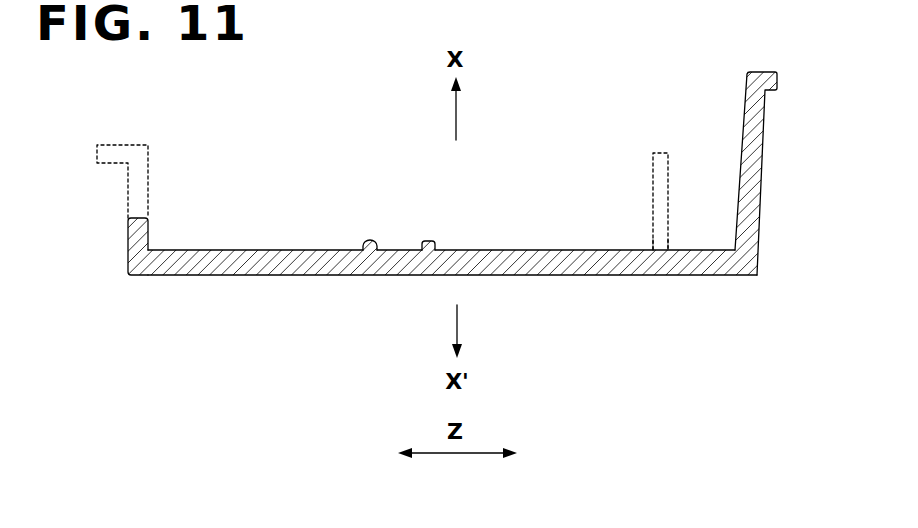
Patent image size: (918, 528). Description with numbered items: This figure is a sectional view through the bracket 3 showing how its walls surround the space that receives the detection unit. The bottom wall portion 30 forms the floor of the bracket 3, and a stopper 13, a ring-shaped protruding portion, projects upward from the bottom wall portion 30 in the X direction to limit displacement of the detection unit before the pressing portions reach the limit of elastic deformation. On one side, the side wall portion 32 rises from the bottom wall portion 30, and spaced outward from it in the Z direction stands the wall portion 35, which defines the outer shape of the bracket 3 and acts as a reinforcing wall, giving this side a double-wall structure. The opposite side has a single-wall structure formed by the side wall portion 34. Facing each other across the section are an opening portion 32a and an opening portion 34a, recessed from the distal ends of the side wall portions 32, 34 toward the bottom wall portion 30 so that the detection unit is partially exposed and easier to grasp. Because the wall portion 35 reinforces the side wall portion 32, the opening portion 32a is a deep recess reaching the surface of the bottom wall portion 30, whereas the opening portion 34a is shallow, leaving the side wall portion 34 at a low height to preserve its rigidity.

The bracket 3 is at (459, 216).
The stopper 13 is at (428, 241).
The bottom wall portion 30 is at (337, 273).
The side wall portion 32 is at (655, 150).
The opening portion 32a is at (663, 250).
The side wall portion 34 is at (128, 243).
The opening portion 34a is at (140, 218).
The wall portion 35 is at (761, 185).